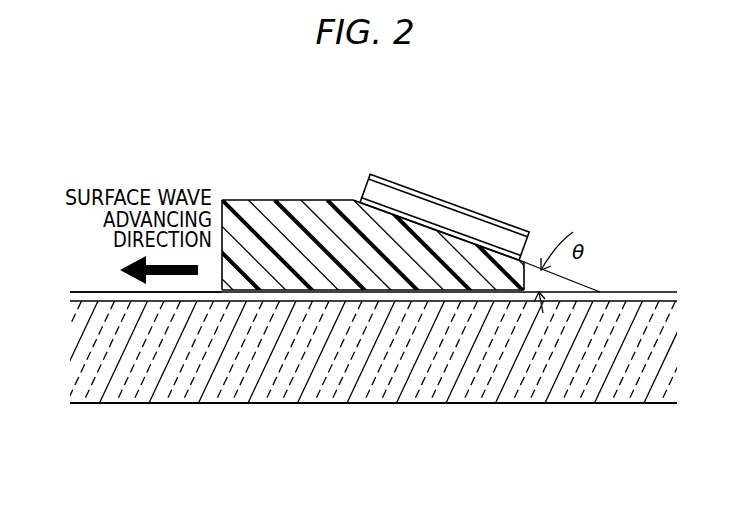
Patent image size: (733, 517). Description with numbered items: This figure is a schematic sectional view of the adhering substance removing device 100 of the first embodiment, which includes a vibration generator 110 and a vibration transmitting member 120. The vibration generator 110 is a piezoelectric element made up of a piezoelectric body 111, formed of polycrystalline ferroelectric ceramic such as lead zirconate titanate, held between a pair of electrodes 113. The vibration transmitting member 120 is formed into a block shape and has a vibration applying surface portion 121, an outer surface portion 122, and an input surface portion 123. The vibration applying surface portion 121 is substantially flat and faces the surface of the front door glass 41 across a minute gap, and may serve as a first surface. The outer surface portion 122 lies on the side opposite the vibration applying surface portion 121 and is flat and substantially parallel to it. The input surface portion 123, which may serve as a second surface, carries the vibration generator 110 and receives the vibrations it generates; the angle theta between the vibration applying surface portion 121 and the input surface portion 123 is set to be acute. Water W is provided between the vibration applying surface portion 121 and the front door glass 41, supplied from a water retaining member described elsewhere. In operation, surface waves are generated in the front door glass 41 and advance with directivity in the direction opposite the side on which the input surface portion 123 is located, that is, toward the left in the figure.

The adhering substance removing device 100 is at (229, 175).
The vibration generator 110 is at (498, 166).
The piezoelectric body 111 is at (423, 212).
The electrode 113 is at (399, 218).
The vibration transmitting member 120 is at (282, 195).
The vibration applying surface portion 121 is at (345, 292).
The outer surface portion 122 is at (304, 200).
The input surface portion 123 is at (524, 262).
The front door glass 41 is at (165, 403).
The water W is at (124, 291).